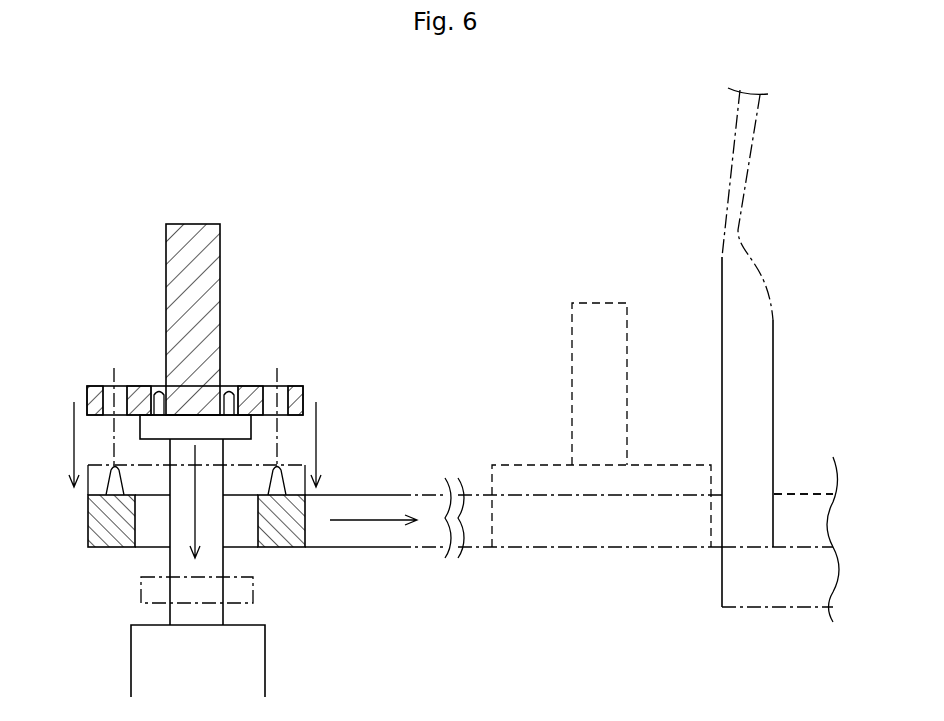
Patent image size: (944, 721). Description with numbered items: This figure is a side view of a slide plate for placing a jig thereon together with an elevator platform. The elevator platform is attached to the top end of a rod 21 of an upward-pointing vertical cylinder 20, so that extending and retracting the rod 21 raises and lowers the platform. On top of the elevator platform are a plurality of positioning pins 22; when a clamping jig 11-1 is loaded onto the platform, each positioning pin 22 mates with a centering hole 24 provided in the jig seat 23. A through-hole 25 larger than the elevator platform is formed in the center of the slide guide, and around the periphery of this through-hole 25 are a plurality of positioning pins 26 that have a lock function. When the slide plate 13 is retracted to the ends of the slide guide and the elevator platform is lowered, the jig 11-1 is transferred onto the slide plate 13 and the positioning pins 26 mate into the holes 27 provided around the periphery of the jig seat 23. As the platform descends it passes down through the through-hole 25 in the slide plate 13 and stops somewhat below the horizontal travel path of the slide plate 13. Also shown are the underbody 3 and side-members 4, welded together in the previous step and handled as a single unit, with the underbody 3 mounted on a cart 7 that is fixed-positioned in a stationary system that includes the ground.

The underbody 3 is at (801, 493).
The side-members 4 is at (723, 183).
The cart 7 is at (722, 592).
The clamping jig 11-1 is at (220, 252).
The slide plate 13 is at (308, 527).
The vertical cylinder 20 is at (266, 658).
The rod 21 is at (226, 558).
The positioning pins 22 is at (248, 388).
The jig seat 23 is at (306, 394).
The centering hole 24 is at (230, 388).
The through-hole 25 is at (137, 533).
The positioning pins 26 is at (106, 488).
The holes 27 is at (110, 388).